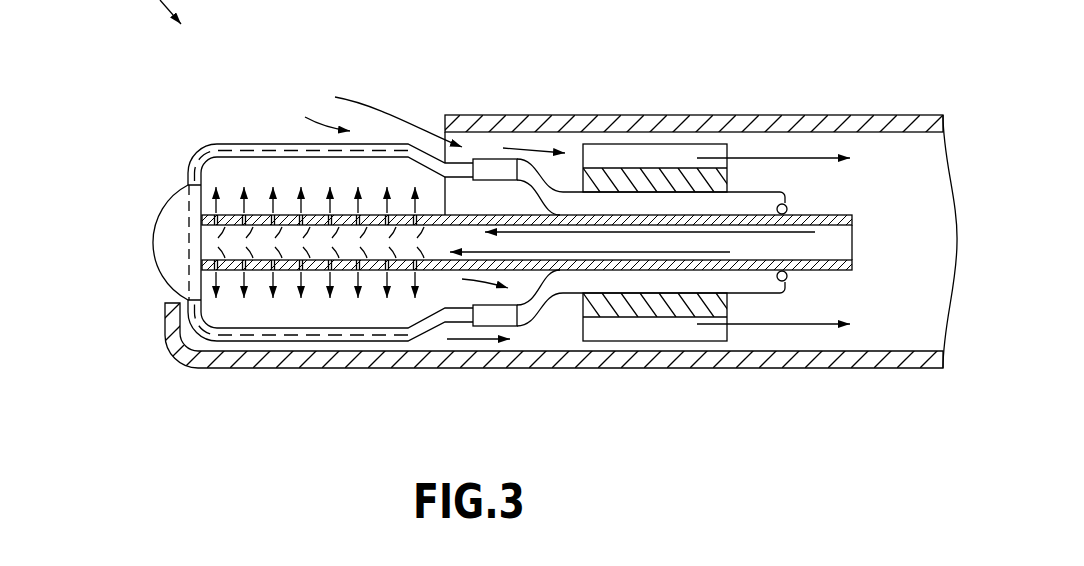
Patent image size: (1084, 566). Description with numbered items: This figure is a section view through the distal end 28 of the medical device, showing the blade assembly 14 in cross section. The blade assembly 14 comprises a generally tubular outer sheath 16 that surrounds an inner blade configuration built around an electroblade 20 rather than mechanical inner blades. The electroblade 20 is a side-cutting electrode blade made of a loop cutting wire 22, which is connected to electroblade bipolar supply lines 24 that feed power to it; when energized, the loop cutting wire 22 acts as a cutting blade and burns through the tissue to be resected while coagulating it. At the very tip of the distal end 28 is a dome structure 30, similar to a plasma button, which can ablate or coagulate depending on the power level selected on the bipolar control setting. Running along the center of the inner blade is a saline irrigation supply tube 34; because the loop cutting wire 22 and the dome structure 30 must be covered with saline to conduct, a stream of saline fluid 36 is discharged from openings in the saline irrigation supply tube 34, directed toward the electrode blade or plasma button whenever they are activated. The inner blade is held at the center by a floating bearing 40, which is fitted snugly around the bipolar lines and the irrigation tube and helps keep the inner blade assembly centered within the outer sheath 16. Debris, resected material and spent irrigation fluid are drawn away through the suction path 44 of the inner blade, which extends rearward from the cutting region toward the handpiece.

The blade assembly 14 is at (839, 66).
The outer sheath 16 is at (361, 369).
The electroblade 20 is at (262, 138).
The loop cutting wire 22 is at (381, 150).
The electroblade bipolar supply lines 24 is at (570, 190).
The distal end 28 is at (99, 212).
The dome structure 30 is at (156, 207).
The saline irrigation supply tube 34 is at (267, 275).
The stream of saline fluid 36 is at (222, 231).
The floating bearing 40 is at (630, 165).
The suction path 44 is at (931, 248).